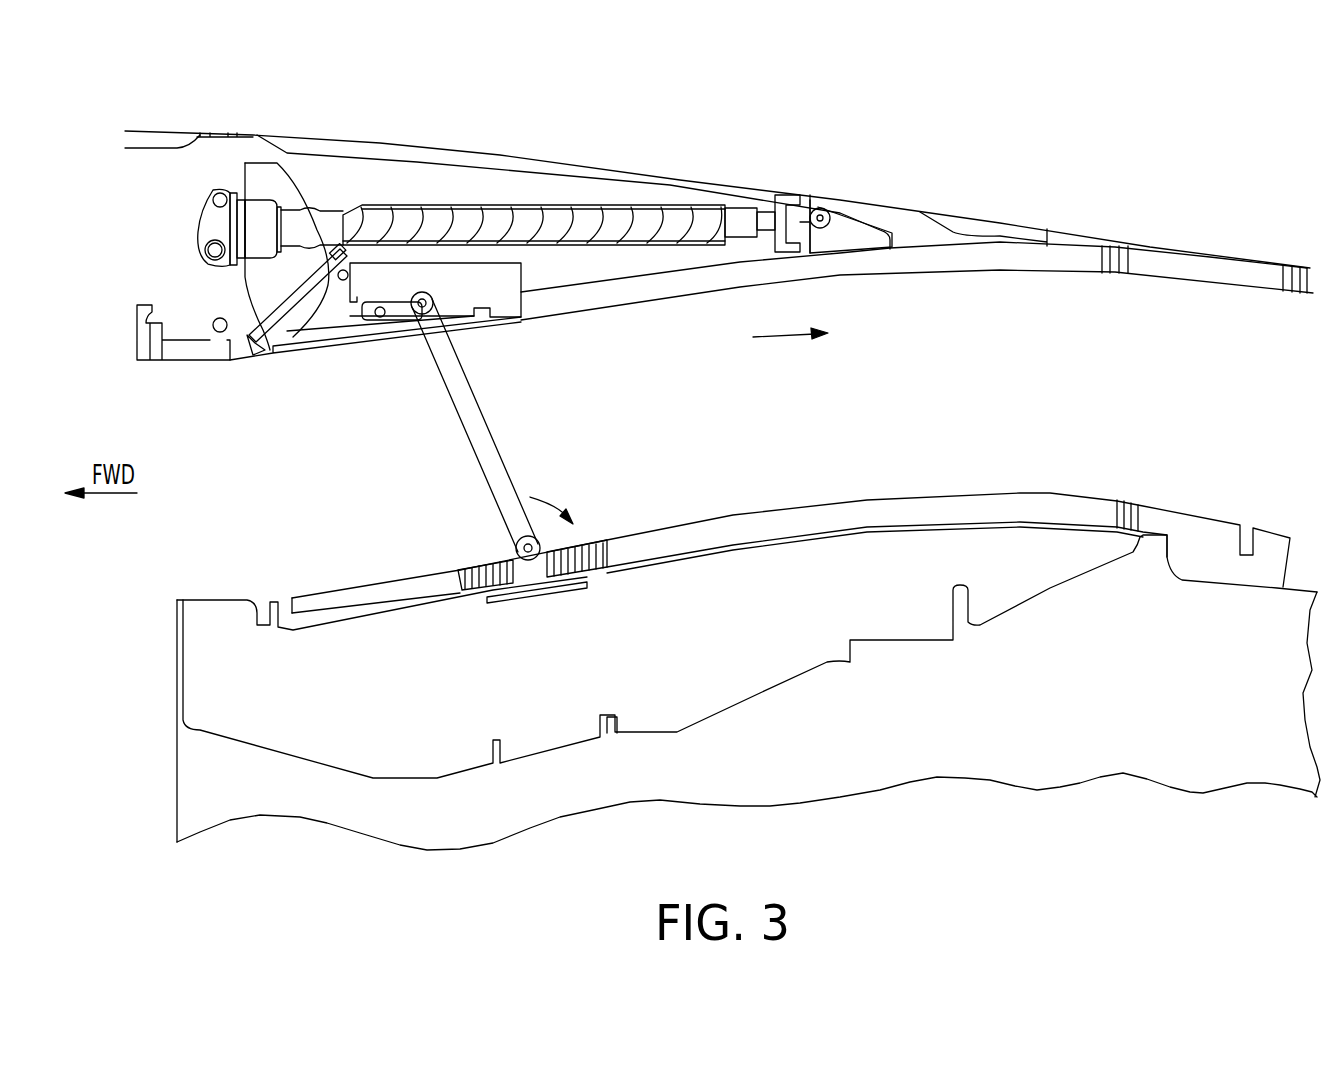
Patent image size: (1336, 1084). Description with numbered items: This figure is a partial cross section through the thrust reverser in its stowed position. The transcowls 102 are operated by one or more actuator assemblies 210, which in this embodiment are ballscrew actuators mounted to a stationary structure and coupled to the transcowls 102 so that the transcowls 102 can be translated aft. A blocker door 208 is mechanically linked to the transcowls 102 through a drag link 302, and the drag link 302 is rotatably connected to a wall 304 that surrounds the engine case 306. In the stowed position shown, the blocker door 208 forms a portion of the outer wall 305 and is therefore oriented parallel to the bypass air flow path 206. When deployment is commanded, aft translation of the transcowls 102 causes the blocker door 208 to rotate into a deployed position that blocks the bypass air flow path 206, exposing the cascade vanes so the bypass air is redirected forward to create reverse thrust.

The transcowl 102 is at (605, 166).
The bypass air flow path 206 is at (779, 338).
The blocker door 208 is at (360, 347).
The actuator assembly 210 is at (200, 220).
The drag link 302 is at (487, 428).
The wall 304 is at (737, 518).
The outer wall 305 is at (925, 271).
The engine case 306 is at (397, 778).